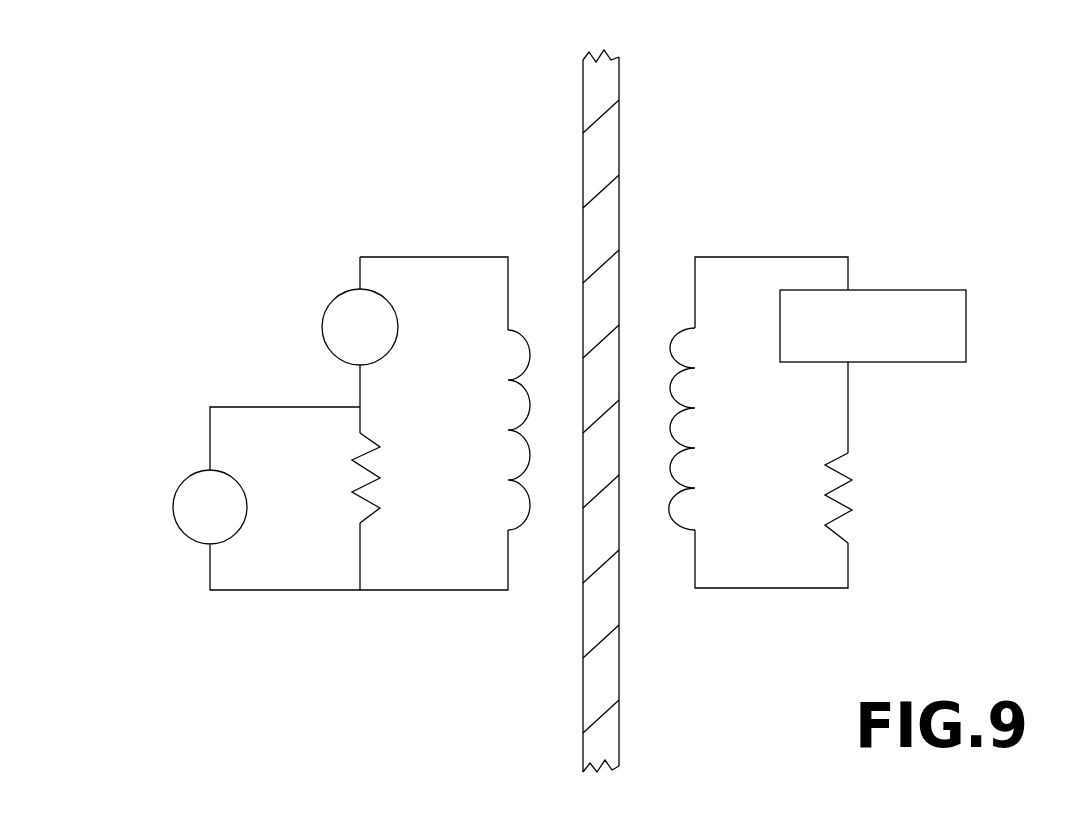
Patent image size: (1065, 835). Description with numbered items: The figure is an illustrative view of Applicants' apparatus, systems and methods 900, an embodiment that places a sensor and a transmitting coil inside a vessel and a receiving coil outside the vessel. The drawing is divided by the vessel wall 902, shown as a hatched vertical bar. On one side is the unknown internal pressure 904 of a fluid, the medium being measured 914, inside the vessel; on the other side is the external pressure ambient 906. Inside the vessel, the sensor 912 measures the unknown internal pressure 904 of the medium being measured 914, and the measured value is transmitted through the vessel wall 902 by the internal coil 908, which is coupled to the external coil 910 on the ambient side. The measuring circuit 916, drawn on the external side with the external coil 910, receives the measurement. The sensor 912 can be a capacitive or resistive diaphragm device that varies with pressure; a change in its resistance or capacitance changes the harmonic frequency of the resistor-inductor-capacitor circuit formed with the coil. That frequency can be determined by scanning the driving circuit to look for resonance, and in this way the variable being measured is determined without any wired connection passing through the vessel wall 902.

The apparatus, systems and methods 900 is at (745, 73).
The vessel wall 902 is at (619, 715).
The unknown internal pressure 904 is at (884, 176).
The external pressure ambient 906 is at (434, 183).
The internal coil 908 is at (682, 516).
The external coil 910 is at (516, 471).
The sensor 912 is at (966, 318).
The medium being measured 914 is at (984, 468).
The measuring circuit 916 is at (356, 276).